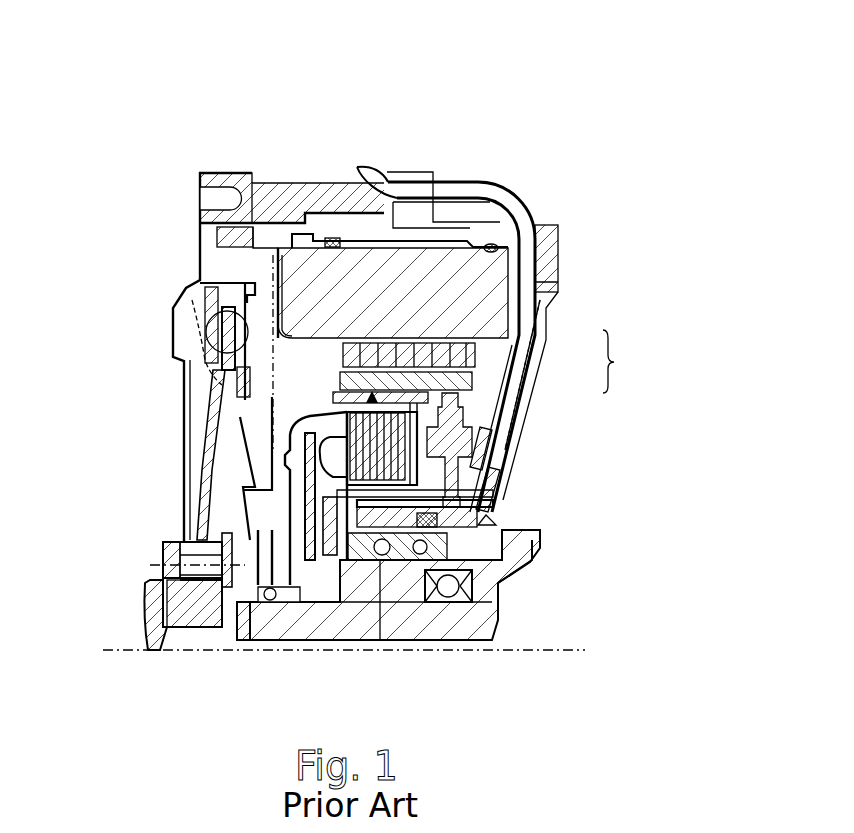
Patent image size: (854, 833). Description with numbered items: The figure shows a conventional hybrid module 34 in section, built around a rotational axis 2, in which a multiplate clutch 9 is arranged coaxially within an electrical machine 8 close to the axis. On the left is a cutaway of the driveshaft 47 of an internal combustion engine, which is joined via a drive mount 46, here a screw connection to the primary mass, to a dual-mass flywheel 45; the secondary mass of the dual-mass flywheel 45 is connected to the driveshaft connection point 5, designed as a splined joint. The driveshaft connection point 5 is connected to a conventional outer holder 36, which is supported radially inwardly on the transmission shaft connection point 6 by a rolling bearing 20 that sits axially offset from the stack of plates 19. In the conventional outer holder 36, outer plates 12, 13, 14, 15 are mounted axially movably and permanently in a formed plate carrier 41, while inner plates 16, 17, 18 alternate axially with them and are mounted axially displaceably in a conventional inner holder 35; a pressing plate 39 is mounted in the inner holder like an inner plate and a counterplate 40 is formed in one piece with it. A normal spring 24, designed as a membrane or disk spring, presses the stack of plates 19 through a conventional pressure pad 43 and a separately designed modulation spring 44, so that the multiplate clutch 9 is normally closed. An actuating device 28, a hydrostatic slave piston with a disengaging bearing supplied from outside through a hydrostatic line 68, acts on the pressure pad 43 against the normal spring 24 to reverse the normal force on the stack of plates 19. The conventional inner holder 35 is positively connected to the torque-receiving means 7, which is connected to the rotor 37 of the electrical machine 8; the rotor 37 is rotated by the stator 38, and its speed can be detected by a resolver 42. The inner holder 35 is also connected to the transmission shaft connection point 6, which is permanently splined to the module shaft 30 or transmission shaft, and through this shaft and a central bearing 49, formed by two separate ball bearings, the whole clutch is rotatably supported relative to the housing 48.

The rotational axis 2 is at (552, 650).
The driveshaft connection point 5 is at (220, 457).
The transmission shaft connection point 6 is at (300, 617).
The torque-receiving means 7 is at (500, 420).
The electrical machine 8 is at (615, 361).
The multiplate clutch 9 is at (598, 52).
The outer plate 12 is at (350, 410).
The outer plate 13 is at (380, 397).
The outer plate 14 is at (393, 385).
The outer plate 15 is at (470, 250).
The inner plate 16 is at (367, 400).
The inner plate 17 is at (393, 393).
The inner plate 18 is at (440, 345).
The stack of plates 19 is at (337, 82).
The rolling bearing 20 is at (270, 612).
The normal spring 24 is at (290, 410).
The actuating device 28 is at (358, 607).
The module shaft 30 is at (453, 630).
The conventional hybrid module 34 is at (620, 87).
The conventional inner holder 35 is at (603, 82).
The conventional outer holder 36 is at (268, 240).
The rotor 37 is at (500, 362).
The stator 38 is at (538, 335).
The pressing plate 39 is at (333, 410).
The counterplate 40 is at (558, 232).
The plate carrier 41 is at (535, 225).
The resolver 42 is at (508, 490).
The conventional pressure pad 43 is at (303, 410).
The modulation spring 44 is at (318, 410).
The dual-mass flywheel 45 is at (190, 298).
The drive mount 46 is at (217, 545).
The driveshaft 47 is at (147, 605).
The housing 48 is at (510, 555).
The central bearing 49 is at (428, 600).
The hydrostatic line 68 is at (481, 414).